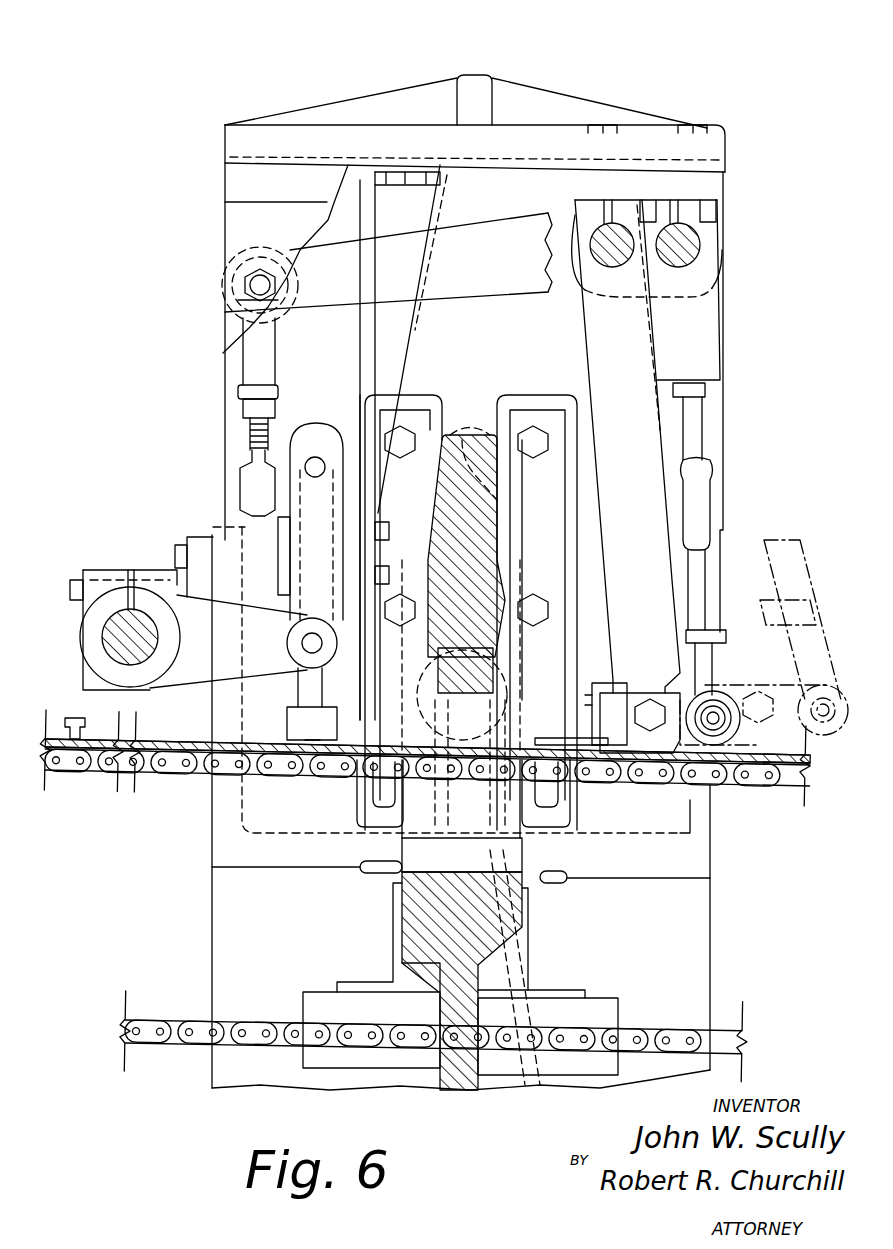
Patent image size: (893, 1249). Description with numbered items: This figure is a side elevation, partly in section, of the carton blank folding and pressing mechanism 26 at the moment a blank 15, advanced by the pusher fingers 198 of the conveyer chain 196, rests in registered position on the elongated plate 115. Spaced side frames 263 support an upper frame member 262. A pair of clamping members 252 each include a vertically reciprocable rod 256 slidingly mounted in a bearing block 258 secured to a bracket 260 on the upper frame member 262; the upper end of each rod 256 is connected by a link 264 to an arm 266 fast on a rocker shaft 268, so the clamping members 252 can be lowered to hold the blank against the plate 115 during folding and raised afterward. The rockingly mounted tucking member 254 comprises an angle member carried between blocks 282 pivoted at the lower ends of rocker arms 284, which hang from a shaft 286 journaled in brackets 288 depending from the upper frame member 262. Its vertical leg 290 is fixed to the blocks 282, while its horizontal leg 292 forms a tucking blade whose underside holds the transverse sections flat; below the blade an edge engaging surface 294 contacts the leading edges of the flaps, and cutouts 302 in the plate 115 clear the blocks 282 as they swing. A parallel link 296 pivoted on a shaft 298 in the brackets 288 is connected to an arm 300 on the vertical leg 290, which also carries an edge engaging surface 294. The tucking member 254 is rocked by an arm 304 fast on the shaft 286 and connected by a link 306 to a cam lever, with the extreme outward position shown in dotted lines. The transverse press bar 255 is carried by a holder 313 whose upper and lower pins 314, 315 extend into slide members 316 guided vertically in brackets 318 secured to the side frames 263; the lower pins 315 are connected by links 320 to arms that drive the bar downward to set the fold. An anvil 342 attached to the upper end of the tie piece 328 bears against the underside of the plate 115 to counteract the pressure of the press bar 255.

The folding and pressing mechanism 26 is at (370, 72).
The upper frame member 262 is at (440, 80).
The side frames 263 is at (225, 232).
The brackets 288 is at (722, 190).
The shaft 286 is at (598, 232).
The shaft 298 is at (700, 243).
The arm 304 is at (492, 292).
The bracket 260 is at (360, 362).
The link 306 is at (245, 462).
The bearing block 258 is at (280, 535).
The link 264 is at (288, 552).
The rocker shaft 268 is at (105, 630).
The arm 266 is at (230, 612).
The clamping members 252 is at (290, 717).
The rod 256 is at (340, 700).
The brackets 318 is at (537, 395).
The upper pins 314 is at (462, 470).
The holder 313 is at (525, 505).
The rocker arms 284 is at (627, 446).
The slide members 316 is at (525, 560).
The parallel link 296 is at (705, 490).
The vertical leg 290 is at (605, 690).
The tucking member 254 is at (604, 693).
The arm 300 is at (685, 745).
The horizontal leg 292 is at (553, 735).
The press bar 255 is at (470, 693).
The lower pins 315 is at (430, 706).
The cutouts 302 is at (528, 775).
The edge engaging surface 294 is at (613, 770).
The blocks 282 is at (648, 756).
The chain 196 is at (775, 787).
The anvil 342 is at (403, 822).
The tie piece 328 is at (425, 952).
The links 320 is at (540, 957).
The pusher fingers 198 is at (75, 716).
The blank 15 is at (160, 739).
The elongated plate 115 is at (180, 750).